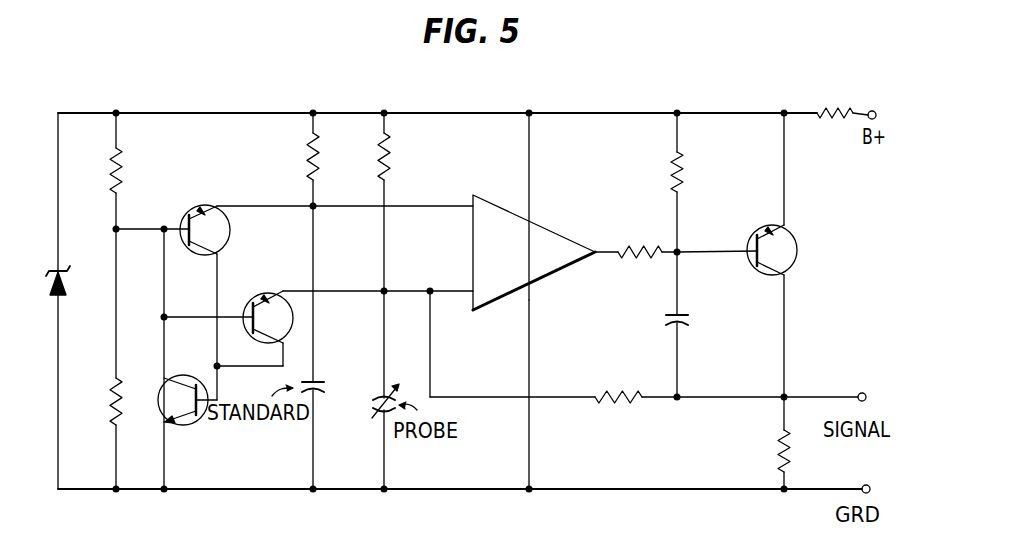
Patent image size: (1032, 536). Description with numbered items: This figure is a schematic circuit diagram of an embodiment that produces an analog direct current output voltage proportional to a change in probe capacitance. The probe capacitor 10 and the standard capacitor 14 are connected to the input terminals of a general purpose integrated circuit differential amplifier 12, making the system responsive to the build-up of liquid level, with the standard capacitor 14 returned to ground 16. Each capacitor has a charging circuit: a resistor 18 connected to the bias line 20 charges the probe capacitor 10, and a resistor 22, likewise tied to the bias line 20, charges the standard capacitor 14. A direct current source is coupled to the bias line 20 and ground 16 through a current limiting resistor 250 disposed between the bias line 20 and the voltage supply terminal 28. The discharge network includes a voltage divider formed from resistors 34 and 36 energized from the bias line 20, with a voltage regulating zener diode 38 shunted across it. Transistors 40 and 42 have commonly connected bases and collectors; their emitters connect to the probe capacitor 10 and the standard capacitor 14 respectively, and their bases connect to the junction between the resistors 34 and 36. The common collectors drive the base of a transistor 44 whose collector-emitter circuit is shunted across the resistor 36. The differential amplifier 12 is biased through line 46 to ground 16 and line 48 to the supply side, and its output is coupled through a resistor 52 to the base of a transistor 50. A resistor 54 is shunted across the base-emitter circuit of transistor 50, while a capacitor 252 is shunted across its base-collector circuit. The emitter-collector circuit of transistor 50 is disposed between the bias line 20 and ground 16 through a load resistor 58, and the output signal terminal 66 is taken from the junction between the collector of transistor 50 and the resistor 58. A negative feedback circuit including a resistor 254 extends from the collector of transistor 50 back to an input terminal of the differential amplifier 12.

The probe capacitor 10 is at (384, 398).
The differential amplifier 12 is at (493, 206).
The standard capacitor 14 is at (318, 393).
The ground 16 is at (583, 489).
The resistor 18 is at (326, 159).
The bias line 20 is at (222, 113).
The resistor 22 is at (390, 172).
The voltage supply terminal 28 is at (892, 98).
The resistor 34 is at (120, 176).
The resistor 36 is at (110, 412).
The zener diode 38 is at (66, 283).
The transistor 40 is at (198, 207).
The transistor 42 is at (285, 340).
The transistor 44 is at (184, 424).
The line 46 is at (531, 445).
The line 48 is at (531, 152).
The transistor 50 is at (789, 250).
The resistor 52 is at (641, 259).
The resistor 54 is at (683, 156).
The load resistor 58 is at (778, 456).
The output signal terminal 66 is at (872, 378).
The current limiting resistor 250 is at (836, 108).
The capacitor 252 is at (688, 312).
The resistor 254 is at (644, 389).